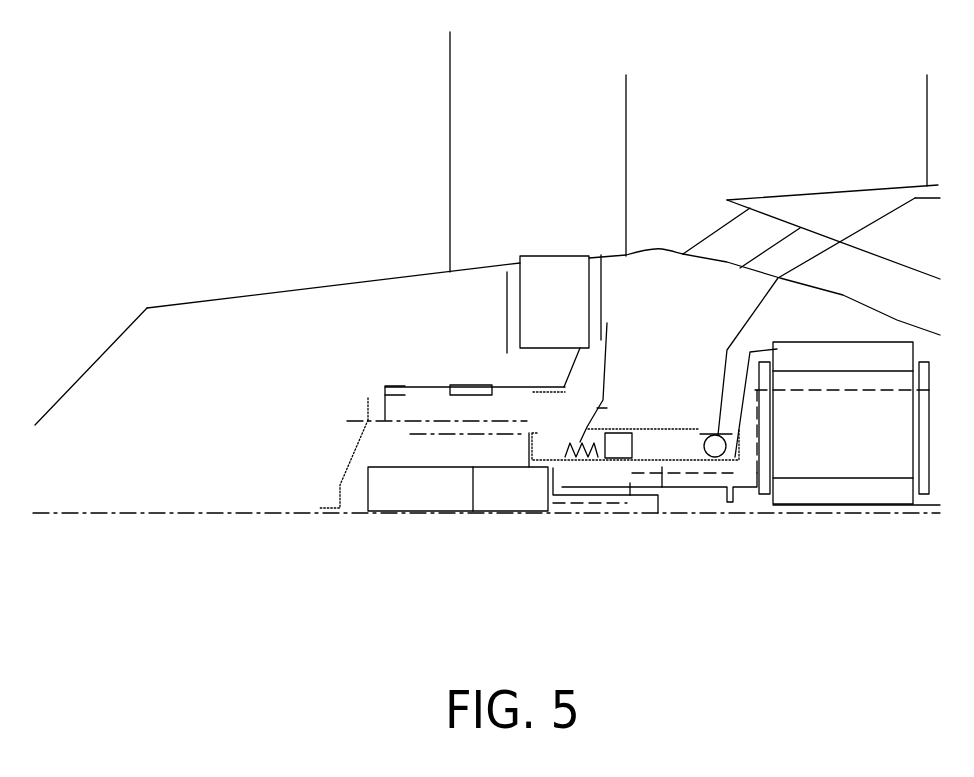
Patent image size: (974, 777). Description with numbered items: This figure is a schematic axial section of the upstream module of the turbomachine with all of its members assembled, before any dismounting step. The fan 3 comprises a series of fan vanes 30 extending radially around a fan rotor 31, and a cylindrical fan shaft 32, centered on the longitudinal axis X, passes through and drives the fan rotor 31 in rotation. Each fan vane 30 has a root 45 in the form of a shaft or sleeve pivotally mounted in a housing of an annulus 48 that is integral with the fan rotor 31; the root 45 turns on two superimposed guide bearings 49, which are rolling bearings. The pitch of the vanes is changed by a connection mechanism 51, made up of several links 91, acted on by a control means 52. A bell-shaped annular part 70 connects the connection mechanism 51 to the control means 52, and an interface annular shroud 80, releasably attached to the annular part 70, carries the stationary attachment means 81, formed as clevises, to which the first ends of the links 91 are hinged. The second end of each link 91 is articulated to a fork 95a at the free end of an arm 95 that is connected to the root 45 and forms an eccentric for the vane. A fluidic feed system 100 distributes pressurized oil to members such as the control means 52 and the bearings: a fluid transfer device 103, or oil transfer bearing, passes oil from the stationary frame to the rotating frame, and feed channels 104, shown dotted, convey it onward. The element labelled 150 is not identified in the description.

The fan 3 is at (425, 62).
The fan vane 30 is at (468, 162).
The fan rotor 31 is at (282, 290).
The nose fairing 150 is at (100, 358).
The root 45 is at (551, 262).
The annulus 48 is at (603, 287).
The attachment means 81 is at (388, 383).
The link 91 is at (457, 385).
The connection mechanism 51 is at (475, 383).
The arm 95 is at (567, 376).
The fork 95a is at (562, 392).
The guide bearing 49 is at (600, 409).
The fan shaft 32 is at (647, 457).
The interface annular shroud 80 is at (368, 397).
The annular part 70 is at (340, 468).
The control means 52 is at (425, 497).
The fluid transfer device 103 is at (642, 513).
The feed channel 104 is at (738, 474).
The fluidic feed system 100 is at (883, 390).
The longitudinal axis X is at (90, 513).